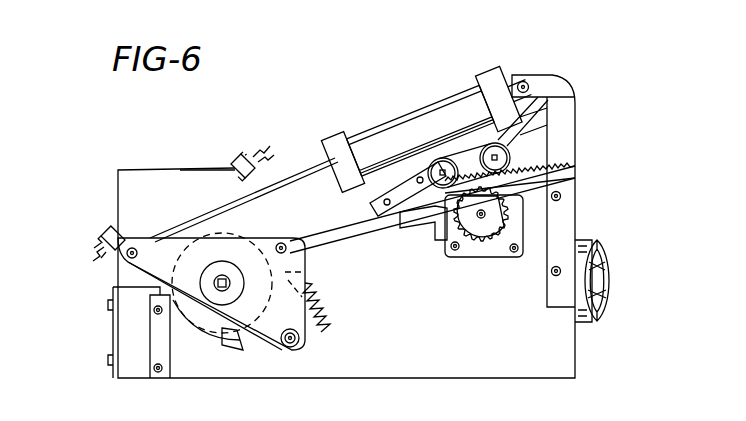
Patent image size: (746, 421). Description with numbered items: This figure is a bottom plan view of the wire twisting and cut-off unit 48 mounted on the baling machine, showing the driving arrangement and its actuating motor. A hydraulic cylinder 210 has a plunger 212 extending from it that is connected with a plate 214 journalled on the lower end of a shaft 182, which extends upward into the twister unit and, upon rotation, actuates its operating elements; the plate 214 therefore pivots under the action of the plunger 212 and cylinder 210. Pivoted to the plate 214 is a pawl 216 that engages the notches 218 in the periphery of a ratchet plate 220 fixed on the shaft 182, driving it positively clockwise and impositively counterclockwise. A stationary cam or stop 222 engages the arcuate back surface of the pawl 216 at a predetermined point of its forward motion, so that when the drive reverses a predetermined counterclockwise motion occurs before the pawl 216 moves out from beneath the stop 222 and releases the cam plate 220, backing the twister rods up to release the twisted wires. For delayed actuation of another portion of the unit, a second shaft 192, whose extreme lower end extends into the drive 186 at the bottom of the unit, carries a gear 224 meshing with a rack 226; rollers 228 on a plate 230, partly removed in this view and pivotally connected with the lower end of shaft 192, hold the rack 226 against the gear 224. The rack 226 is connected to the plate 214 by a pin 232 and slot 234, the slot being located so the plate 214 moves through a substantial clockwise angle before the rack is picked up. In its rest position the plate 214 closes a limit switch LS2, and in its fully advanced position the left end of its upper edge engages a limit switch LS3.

The shear assembly 48 is at (222, 154).
The drive 186 is at (146, 190).
The limit switch LS3 is at (249, 156).
The limit switch LS2 is at (106, 235).
The plunger 212 is at (286, 192).
The hydraulic cylinder 210 is at (393, 130).
The plate 230 is at (480, 148).
The rollers 228 is at (505, 153).
The rack 226 is at (566, 165).
The pin 232 is at (307, 255).
The ratchet plate 220 is at (267, 234).
The slot 234 is at (300, 238).
The plate 214 is at (127, 262).
The notches 218 is at (308, 278).
The drive shaft 192 is at (479, 216).
The gear 224 is at (480, 238).
The stationary cam or stop 222 is at (160, 322).
The shaft 182 is at (221, 291).
The pawl 216 is at (241, 336).